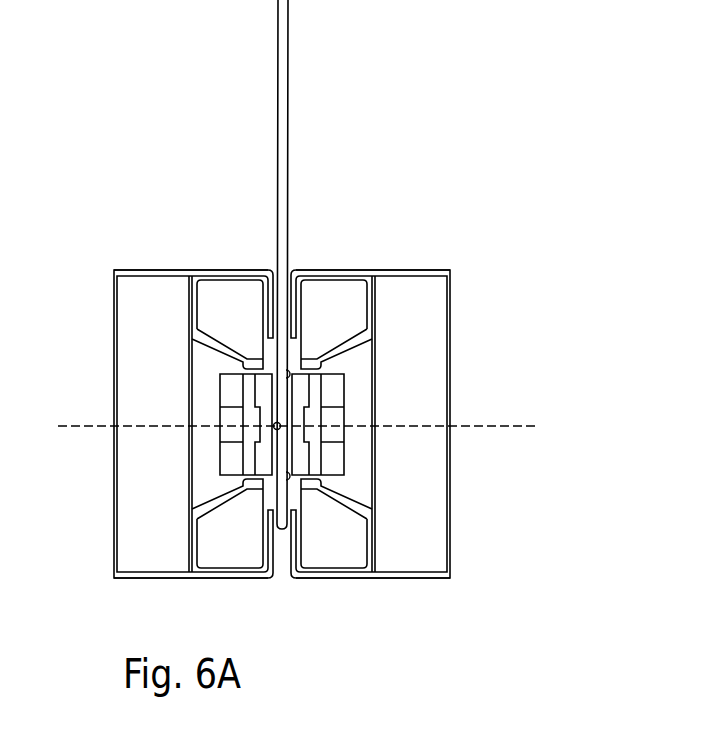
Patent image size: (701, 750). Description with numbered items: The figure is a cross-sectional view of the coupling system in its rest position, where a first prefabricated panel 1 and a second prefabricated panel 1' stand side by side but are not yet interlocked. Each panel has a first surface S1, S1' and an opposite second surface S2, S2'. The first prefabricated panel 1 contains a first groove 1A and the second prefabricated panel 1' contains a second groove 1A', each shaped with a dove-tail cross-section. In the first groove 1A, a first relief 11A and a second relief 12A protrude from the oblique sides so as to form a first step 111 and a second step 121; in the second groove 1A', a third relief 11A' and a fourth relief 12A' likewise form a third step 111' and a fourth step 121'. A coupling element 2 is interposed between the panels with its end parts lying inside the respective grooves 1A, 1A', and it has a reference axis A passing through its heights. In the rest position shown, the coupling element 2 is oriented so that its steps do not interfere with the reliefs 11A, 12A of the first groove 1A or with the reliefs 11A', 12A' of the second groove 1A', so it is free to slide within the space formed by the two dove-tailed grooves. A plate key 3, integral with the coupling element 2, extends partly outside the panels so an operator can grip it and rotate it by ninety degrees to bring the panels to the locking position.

The first prefabricated panel 1 is at (193, 381).
The second prefabricated panel 1' is at (379, 389).
The coupling element 2 is at (347, 433).
The plate key 3 is at (303, 80).
The first groove 1A is at (149, 424).
The second groove 1A' is at (410, 424).
The first relief 11A is at (230, 263).
The third relief 11A' is at (337, 263).
The second relief 12A is at (239, 592).
The fourth relief 12A' is at (333, 588).
The first step 111 is at (170, 351).
The third step 111' is at (412, 352).
The second step 121 is at (164, 486).
The fourth step 121' is at (398, 486).
The first surface S1 is at (189, 597).
The first surface S1' is at (380, 597).
The second surface S2 is at (170, 251).
The second surface S2' is at (400, 249).
The reference axis A is at (297, 415).